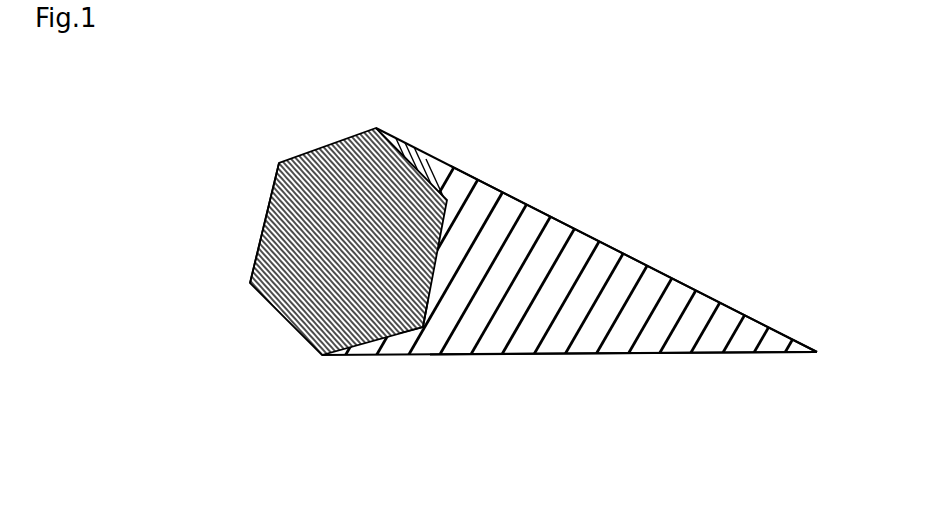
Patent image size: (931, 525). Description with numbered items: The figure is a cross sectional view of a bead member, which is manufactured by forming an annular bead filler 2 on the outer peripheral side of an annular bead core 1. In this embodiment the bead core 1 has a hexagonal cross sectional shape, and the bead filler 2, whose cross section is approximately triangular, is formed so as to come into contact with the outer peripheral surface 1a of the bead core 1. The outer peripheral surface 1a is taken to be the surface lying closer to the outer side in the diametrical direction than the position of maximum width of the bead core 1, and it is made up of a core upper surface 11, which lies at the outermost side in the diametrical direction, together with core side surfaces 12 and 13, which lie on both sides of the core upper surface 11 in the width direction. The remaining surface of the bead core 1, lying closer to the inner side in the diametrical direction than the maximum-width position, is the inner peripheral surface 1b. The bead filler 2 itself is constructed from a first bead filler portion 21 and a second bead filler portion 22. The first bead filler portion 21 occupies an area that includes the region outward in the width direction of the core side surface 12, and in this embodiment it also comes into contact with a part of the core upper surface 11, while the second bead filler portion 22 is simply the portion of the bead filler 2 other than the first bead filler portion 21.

The bead core 1 is at (310, 295).
The outer peripheral surface 1a is at (424, 328).
The inner peripheral surface 1b is at (263, 222).
The bead filler 2 is at (630, 350).
The core upper surface 11 is at (442, 247).
The core side surface 12 is at (383, 340).
The core side surface 13 is at (418, 165).
The first bead filler portion 21 is at (453, 343).
The second bead filler portion 22 is at (575, 267).